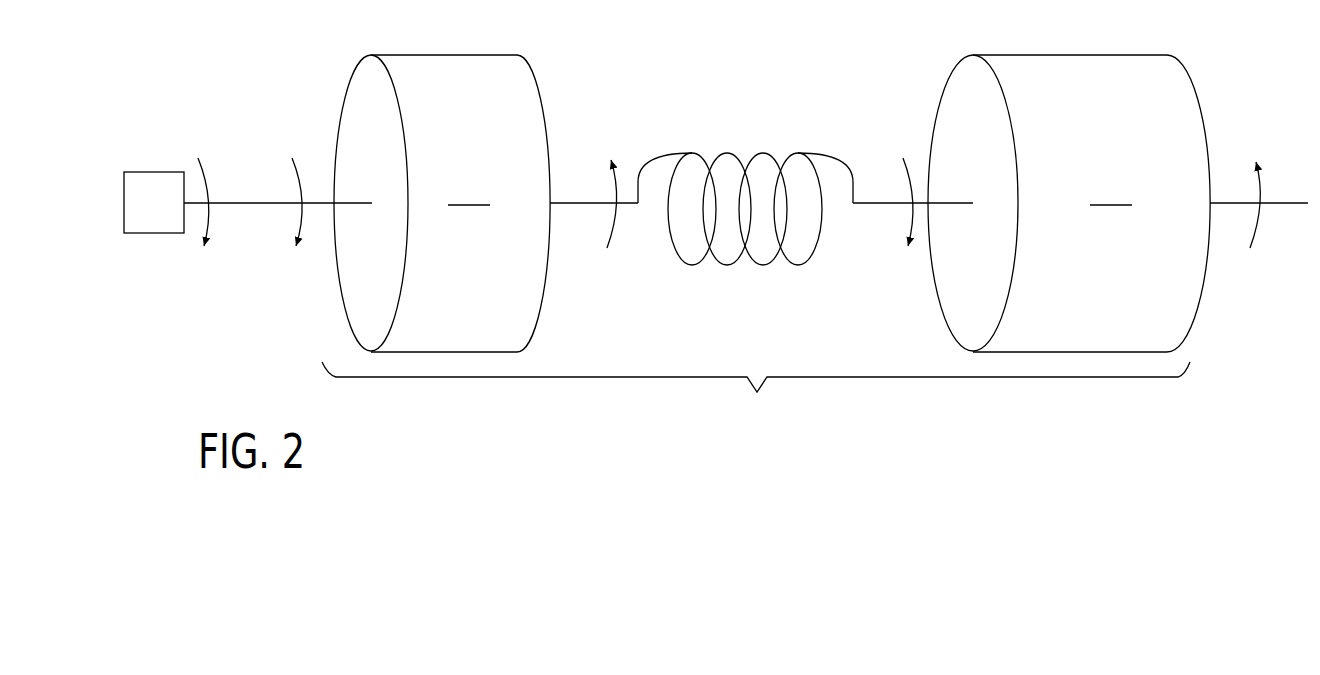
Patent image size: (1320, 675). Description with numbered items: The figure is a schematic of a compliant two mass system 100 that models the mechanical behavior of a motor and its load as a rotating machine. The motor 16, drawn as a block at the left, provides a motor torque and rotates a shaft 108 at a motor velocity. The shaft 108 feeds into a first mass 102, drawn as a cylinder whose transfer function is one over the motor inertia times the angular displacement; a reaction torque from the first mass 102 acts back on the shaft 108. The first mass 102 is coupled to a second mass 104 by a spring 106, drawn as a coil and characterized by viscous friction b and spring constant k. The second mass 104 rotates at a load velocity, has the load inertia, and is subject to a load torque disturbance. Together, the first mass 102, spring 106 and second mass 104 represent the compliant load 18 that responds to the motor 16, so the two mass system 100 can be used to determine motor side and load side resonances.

The compliant two mass system 100 is at (874, 56).
The motor 16 is at (153, 172).
The shaft 108 is at (252, 202).
The first mass 102 is at (443, 55).
The spring 106 is at (745, 153).
The second mass 104 is at (1067, 55).
The load 18 is at (756, 392).